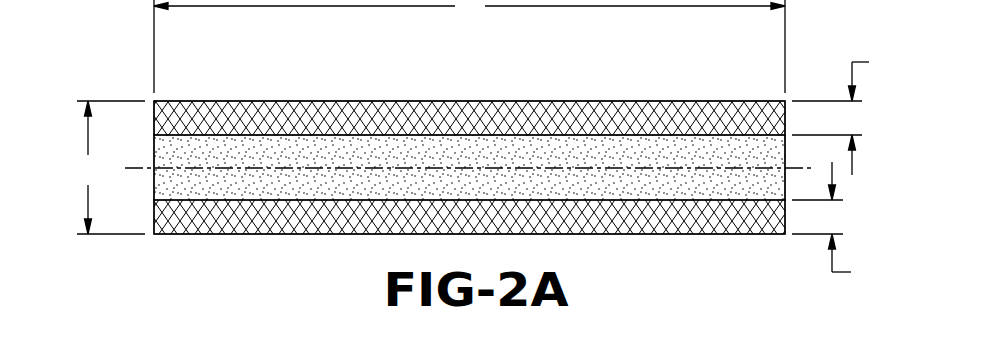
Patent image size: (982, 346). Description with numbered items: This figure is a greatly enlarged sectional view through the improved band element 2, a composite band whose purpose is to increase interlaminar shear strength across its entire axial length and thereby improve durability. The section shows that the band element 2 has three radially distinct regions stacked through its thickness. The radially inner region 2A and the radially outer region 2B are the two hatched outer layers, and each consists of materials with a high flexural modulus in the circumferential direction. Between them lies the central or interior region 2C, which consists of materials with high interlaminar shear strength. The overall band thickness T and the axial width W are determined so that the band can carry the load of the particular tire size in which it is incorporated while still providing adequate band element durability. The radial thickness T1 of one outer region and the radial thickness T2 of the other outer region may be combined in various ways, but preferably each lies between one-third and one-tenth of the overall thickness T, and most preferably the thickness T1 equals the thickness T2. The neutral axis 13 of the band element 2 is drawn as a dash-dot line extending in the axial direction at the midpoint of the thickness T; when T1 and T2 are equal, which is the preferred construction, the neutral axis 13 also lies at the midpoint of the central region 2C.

The band element 2 is at (469, 169).
The radially inner region 2A is at (658, 227).
The radially outer region 2B is at (553, 108).
The central region 2C is at (475, 155).
The neutral axis 13 is at (311, 168).
The axial width W is at (469, 46).
The overall band thickness T is at (111, 167).
The outer region thickness T1 is at (845, 114).
The inner region thickness T2 is at (836, 228).